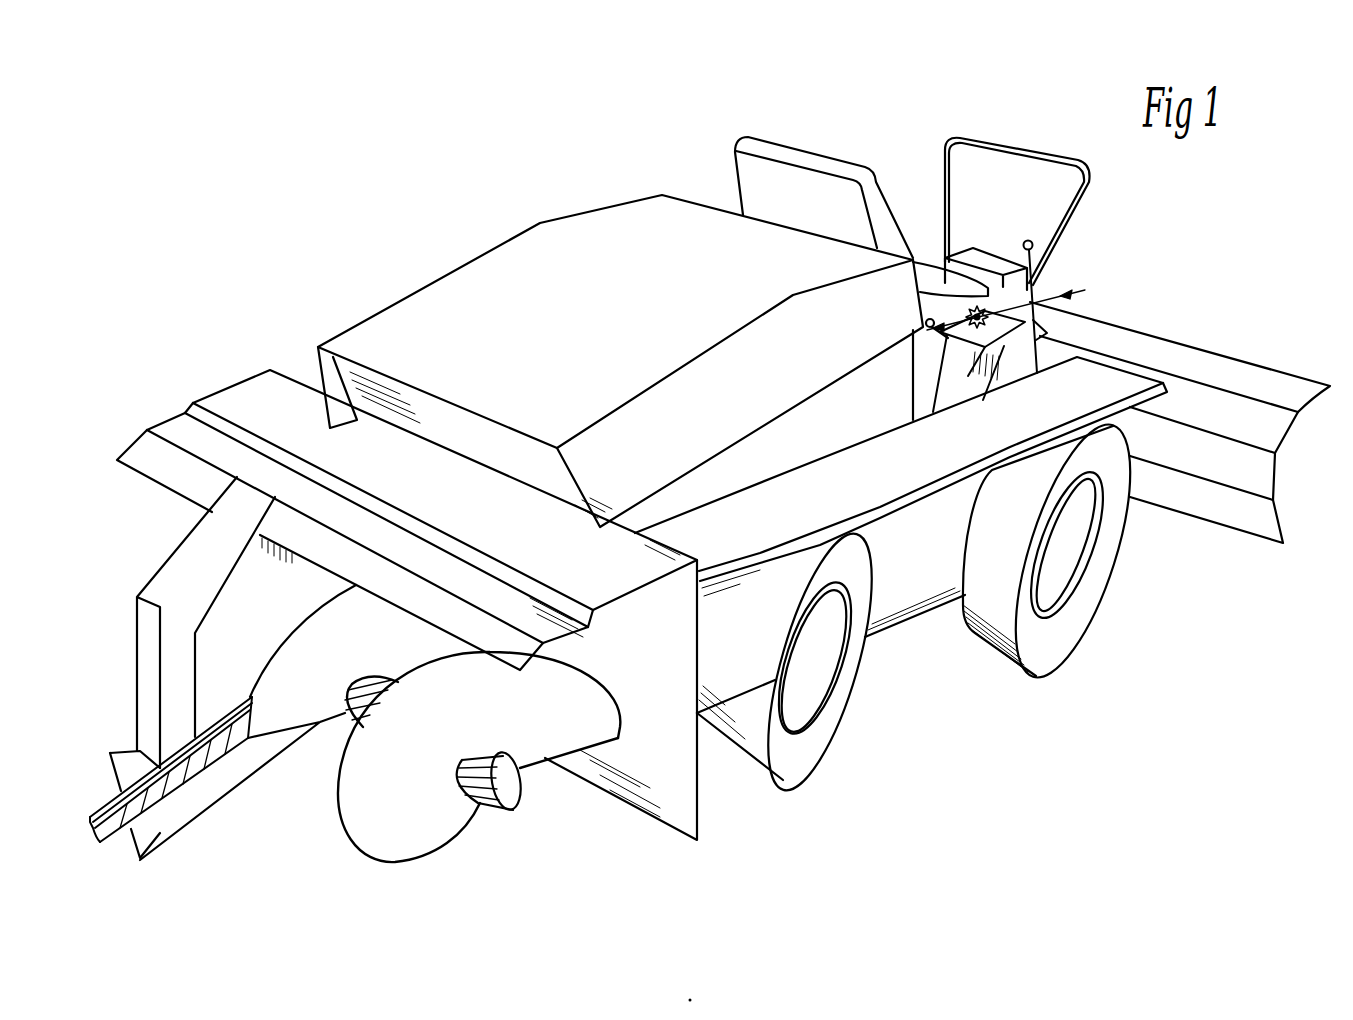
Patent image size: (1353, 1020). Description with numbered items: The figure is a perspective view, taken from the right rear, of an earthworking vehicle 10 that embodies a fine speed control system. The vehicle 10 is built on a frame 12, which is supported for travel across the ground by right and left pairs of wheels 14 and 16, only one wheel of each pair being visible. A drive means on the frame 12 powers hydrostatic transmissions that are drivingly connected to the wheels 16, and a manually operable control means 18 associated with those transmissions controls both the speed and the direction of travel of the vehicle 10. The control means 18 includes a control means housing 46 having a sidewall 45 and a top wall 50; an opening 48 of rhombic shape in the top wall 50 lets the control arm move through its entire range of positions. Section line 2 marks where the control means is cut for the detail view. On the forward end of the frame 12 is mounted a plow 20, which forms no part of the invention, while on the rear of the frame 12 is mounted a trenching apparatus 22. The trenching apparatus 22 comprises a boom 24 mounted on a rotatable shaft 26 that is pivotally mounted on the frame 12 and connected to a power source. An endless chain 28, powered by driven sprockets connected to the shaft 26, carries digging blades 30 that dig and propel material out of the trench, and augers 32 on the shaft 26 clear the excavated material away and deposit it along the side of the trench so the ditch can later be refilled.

The earthworking vehicle 10 is at (566, 201).
The frame 12 is at (917, 597).
The wheels 14 is at (823, 738).
The wheels 16 is at (1077, 630).
The control means 18 is at (1076, 258).
The plow 20 is at (1243, 363).
The trenching apparatus 22 is at (97, 630).
The boom 24 is at (230, 780).
The rotatable shaft 26 is at (357, 720).
The endless chain 28 is at (135, 810).
The digging blades 30 is at (123, 756).
The augers 32 is at (480, 803).
The sidewall 45 is at (1012, 373).
The control means housing 46 is at (1037, 373).
The opening 48 is at (1047, 333).
The top wall 50 is at (993, 343).
The section line 2- 2 is at (935, 333).